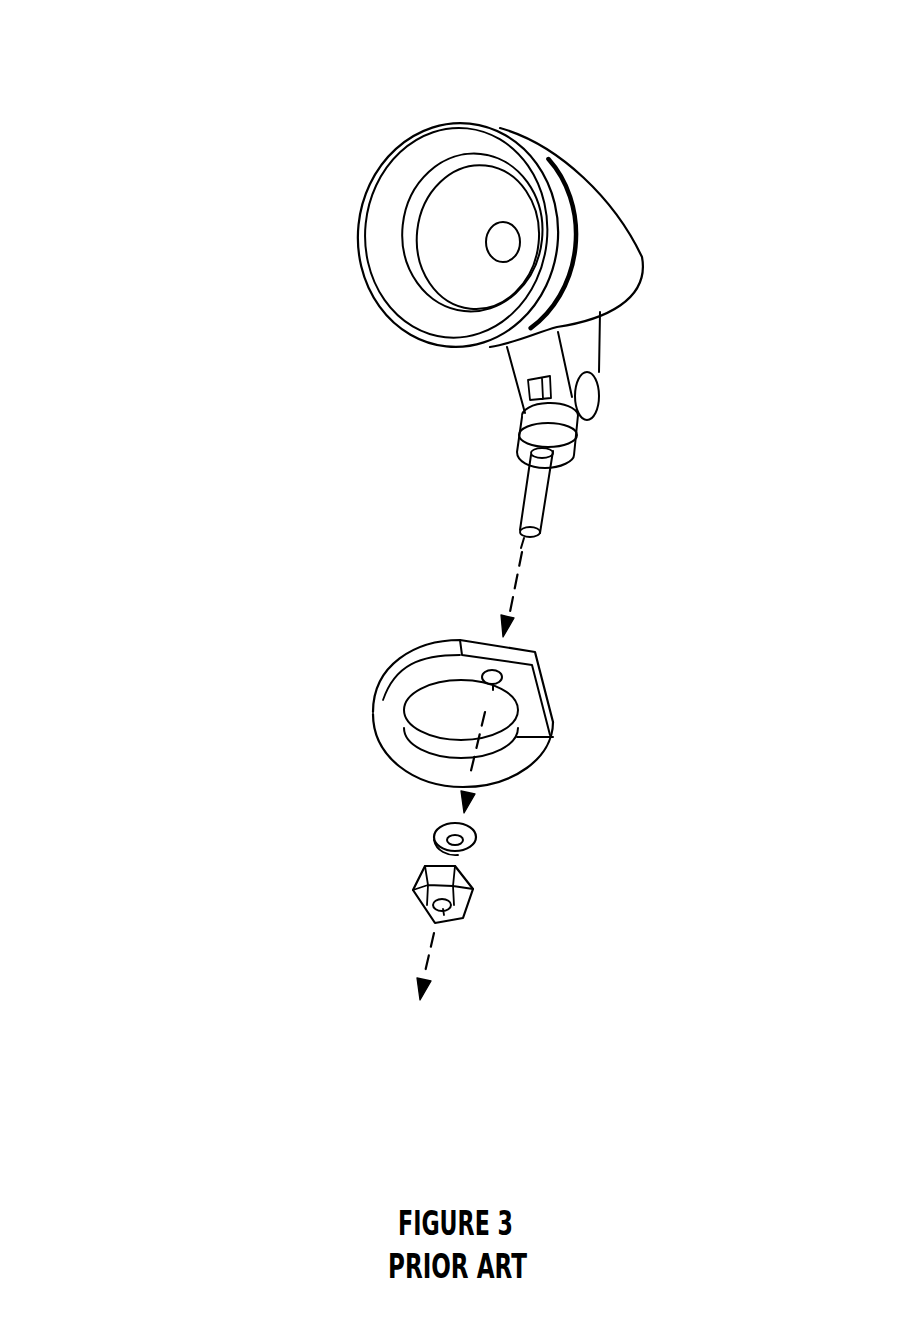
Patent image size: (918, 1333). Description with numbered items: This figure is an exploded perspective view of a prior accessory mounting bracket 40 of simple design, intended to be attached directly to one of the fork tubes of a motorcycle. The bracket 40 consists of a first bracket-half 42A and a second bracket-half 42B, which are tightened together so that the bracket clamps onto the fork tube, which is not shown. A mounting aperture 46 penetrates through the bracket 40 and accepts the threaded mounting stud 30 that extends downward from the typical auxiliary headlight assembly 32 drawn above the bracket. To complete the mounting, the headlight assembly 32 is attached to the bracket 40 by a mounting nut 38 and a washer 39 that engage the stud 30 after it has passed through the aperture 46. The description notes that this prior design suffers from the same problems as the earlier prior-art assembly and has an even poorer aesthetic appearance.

The auxiliary headlight assembly 32 is at (590, 200).
The threaded mounting stud 30 is at (537, 500).
The accessory mounting bracket 40 is at (590, 804).
The first bracket-half 42A is at (403, 710).
The second bracket-half 42B is at (408, 738).
The mounting aperture 46 is at (527, 709).
The washer 39 is at (468, 853).
The mounting nut 38 is at (473, 887).